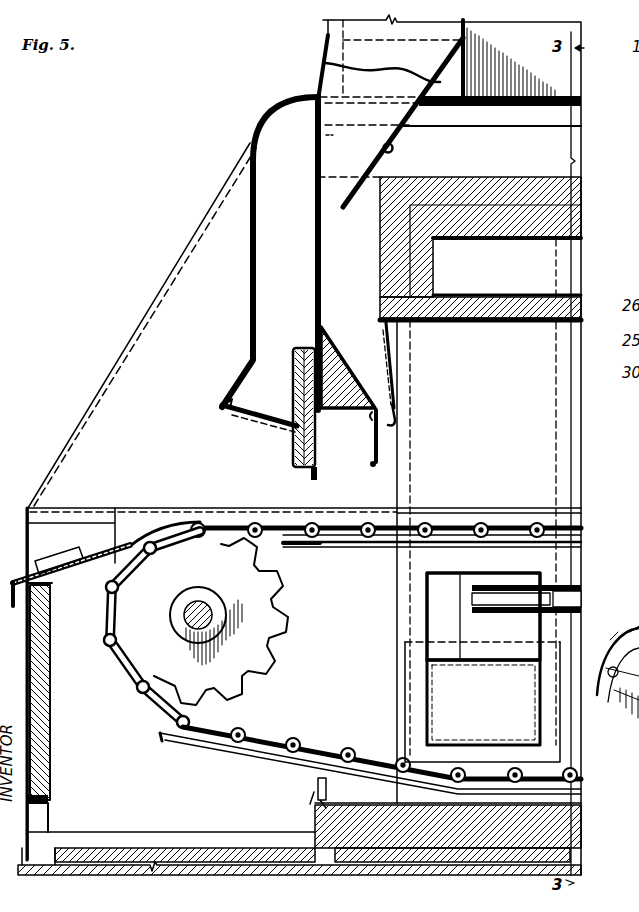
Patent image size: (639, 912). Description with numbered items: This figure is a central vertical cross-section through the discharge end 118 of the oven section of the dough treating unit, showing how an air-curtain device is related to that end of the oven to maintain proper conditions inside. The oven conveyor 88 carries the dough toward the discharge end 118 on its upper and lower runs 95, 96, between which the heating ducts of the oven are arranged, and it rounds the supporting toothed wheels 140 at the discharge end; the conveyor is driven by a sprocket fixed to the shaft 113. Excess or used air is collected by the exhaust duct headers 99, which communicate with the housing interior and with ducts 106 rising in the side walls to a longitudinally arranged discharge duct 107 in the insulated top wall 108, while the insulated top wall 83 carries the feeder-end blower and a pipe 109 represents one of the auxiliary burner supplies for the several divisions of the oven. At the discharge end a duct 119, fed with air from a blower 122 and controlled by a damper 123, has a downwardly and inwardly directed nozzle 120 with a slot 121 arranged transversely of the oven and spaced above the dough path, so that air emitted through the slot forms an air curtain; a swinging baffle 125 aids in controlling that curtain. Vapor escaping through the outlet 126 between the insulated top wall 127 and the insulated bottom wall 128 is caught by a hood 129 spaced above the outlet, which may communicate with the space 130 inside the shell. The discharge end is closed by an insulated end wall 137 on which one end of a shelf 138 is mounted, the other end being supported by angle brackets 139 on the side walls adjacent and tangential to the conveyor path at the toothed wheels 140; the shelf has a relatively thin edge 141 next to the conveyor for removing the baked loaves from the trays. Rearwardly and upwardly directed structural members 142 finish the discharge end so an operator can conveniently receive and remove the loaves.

The insulated top wall 83 is at (550, 96).
The oven conveyor 88 is at (433, 522).
The run of the conveyor 95 is at (512, 522).
The run of the conveyor 96 is at (490, 775).
The exhaust duct headers 99 is at (427, 600).
The ducts 106 is at (610, 426).
The discharge duct 107 is at (540, 270).
The insulated top wall 108 is at (548, 322).
The pipe 109 is at (578, 593).
The shaft 113 is at (205, 607).
The discharge end 118 is at (140, 346).
The duct 119 is at (340, 302).
The nozzle 120 is at (394, 372).
The slot 121 is at (392, 418).
The blower 122 is at (326, 38).
The damper 123 is at (385, 149).
The swinging baffle 125 is at (372, 455).
The outlet 126 is at (312, 483).
The insulated top wall 127 is at (290, 428).
The insulated bottom wall 128 is at (548, 845).
The hood 129 is at (272, 256).
The space 130 is at (540, 152).
The insulated end wall 137 is at (50, 726).
The shelf 138 is at (98, 545).
The angle brackets 139 is at (74, 550).
The supporting toothed wheels 140 is at (270, 663).
The thin edge 141 is at (128, 547).
The structural members 142 is at (172, 273).